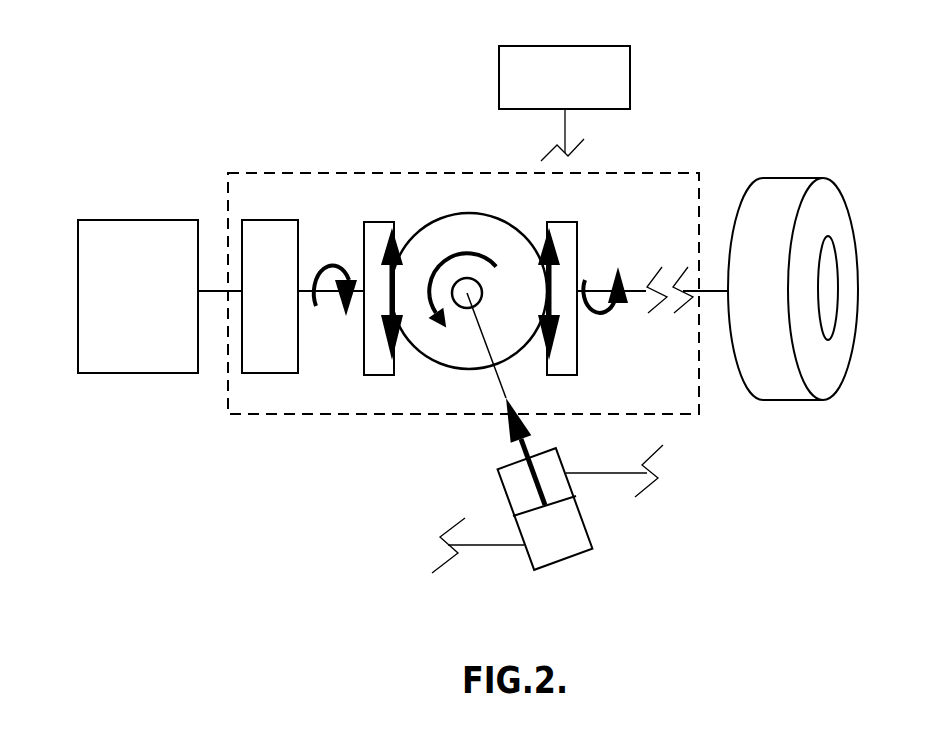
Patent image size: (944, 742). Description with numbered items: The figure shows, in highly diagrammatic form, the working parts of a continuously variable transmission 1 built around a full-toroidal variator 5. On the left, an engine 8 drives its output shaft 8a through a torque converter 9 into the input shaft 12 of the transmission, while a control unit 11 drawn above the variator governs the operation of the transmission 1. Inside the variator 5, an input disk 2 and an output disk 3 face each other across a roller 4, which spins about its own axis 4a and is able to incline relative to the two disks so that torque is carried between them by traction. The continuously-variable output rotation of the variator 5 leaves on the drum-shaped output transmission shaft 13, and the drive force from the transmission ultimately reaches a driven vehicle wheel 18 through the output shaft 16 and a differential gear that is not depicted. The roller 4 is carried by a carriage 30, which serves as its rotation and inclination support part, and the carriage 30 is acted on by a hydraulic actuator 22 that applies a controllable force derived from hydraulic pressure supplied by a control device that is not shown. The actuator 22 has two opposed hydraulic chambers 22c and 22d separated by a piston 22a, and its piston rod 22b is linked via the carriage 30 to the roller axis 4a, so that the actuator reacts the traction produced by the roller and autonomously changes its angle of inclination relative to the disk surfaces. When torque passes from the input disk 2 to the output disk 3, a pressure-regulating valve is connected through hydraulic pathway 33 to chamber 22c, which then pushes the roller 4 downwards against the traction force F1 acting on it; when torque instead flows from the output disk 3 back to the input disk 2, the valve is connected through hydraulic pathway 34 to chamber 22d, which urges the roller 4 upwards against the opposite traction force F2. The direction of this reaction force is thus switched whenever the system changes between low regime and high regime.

The continuously variable transmission 1 is at (358, 101).
The input disk 2 is at (372, 221).
The output disk 3 is at (563, 221).
The roller 4 is at (424, 226).
The axis of the roller 4a is at (471, 296).
The variator 5 is at (465, 189).
The engine 8 is at (128, 219).
The output shaft 8a is at (216, 289).
The torque converter 9 is at (268, 219).
The control unit 11 is at (499, 77).
The input shaft 12 is at (354, 262).
The output transmission shaft 13 is at (583, 283).
The output shaft 16 is at (707, 290).
The driven vehicle wheel 18 is at (770, 207).
The hydraulic actuator 22 is at (483, 470).
The piston 22a is at (528, 508).
The piston rod 22b is at (497, 379).
The hydraulic chamber 22c is at (553, 548).
The hydraulic chamber 22d is at (550, 465).
The carriage 30 is at (482, 349).
The hydraulic pathway 33 is at (483, 547).
The hydraulic pathway 34 is at (607, 475).
The traction force F1 is at (398, 280).
The traction force F2 is at (387, 328).